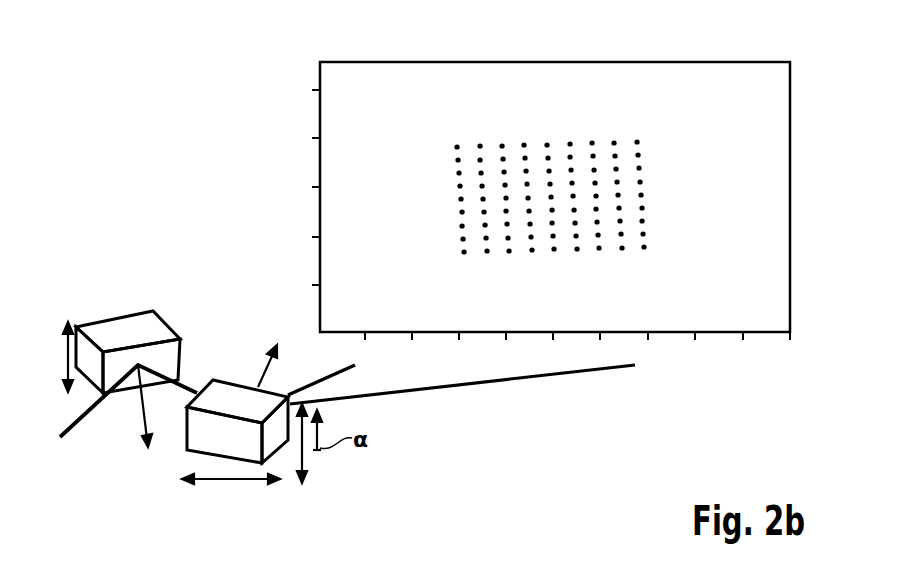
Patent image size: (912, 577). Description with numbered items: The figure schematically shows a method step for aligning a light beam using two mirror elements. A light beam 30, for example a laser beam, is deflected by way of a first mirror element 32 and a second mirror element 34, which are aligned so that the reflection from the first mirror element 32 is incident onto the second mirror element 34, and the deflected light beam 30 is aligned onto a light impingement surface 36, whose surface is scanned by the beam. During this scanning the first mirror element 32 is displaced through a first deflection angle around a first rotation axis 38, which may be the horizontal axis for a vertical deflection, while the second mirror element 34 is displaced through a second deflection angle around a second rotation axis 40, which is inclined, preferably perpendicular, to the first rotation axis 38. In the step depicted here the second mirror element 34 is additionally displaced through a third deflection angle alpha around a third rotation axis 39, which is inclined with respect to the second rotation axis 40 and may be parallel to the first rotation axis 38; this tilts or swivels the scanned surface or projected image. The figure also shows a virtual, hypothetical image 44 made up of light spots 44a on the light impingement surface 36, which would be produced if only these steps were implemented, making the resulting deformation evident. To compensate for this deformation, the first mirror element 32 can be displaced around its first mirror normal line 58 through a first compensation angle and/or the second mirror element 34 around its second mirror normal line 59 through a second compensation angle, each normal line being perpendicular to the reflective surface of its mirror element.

The light beam 30 is at (78, 420).
The first mirror element 32 is at (132, 325).
The second mirror element 34 is at (275, 438).
The light impingement surface 36 is at (720, 333).
The first rotation axis 38 is at (67, 360).
The third rotation axis 39 is at (305, 455).
The second rotation axis 40 is at (233, 482).
The virtual image 44 is at (556, 122).
The light spots 44a is at (638, 154).
The first mirror normal line 58 is at (137, 395).
The second mirror normal line 59 is at (258, 375).